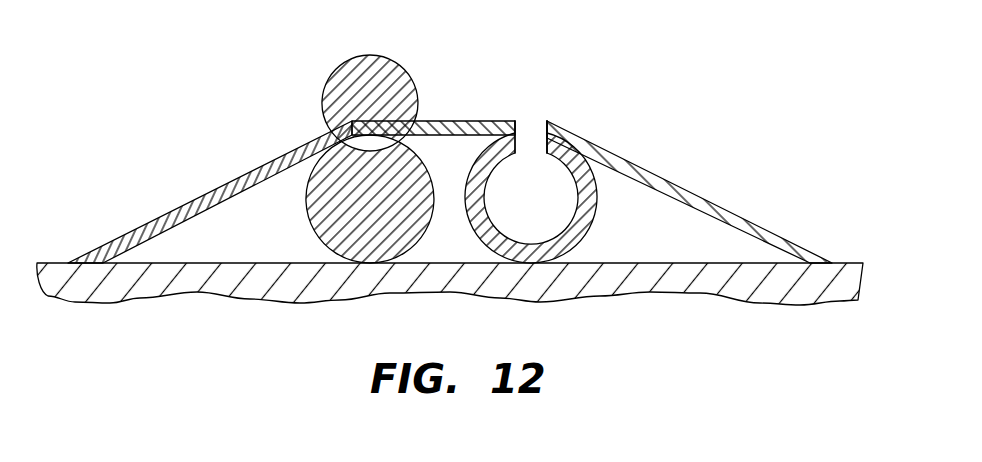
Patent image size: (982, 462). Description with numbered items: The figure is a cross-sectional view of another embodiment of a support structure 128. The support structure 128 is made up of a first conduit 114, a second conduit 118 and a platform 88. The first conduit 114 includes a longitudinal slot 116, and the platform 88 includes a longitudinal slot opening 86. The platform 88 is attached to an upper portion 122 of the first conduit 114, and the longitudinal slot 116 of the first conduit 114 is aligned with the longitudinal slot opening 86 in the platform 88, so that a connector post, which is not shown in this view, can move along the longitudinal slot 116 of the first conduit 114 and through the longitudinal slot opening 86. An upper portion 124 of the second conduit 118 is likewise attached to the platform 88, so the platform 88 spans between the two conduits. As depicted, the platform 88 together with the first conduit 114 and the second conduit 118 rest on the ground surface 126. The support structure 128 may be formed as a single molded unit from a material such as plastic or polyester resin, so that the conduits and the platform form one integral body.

The ground surface 126 is at (845, 262).
The upper portion of the second conduit 124 is at (348, 148).
The platform 88 is at (390, 128).
The upper portion of the first conduit 122 is at (573, 163).
The second conduit 118 is at (345, 250).
The first conduit 114 is at (557, 252).
The longitudinal slot 116 is at (527, 142).
The longitudinal slot opening 86 is at (538, 127).
The support structure 128 is at (777, 97).